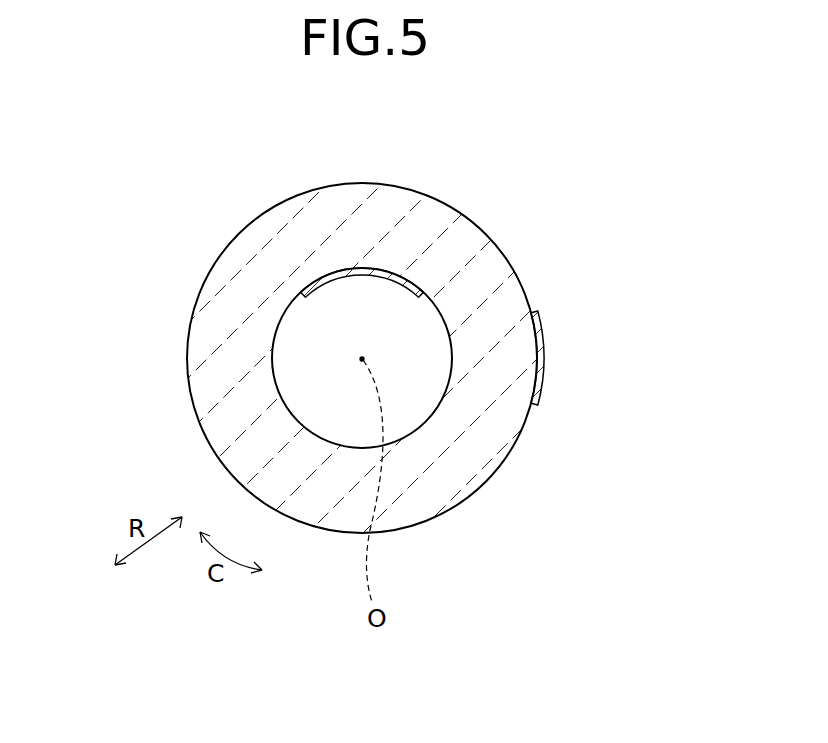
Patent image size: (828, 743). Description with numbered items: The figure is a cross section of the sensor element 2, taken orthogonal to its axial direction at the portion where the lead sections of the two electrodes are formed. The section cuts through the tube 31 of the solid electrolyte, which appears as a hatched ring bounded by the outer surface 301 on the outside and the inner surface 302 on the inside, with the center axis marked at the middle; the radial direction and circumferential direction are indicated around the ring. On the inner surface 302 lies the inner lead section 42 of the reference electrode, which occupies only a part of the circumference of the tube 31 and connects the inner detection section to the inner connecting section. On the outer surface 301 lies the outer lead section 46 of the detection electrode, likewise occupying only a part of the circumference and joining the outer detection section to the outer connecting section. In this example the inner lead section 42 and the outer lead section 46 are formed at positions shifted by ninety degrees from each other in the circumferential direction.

The sensor element 2 is at (356, 338).
The tube 31 is at (337, 338).
The inner lead section 42 is at (363, 268).
The outer lead section 46 is at (606, 360).
The outer surface 301 is at (187, 350).
The inner surface 302 is at (274, 372).